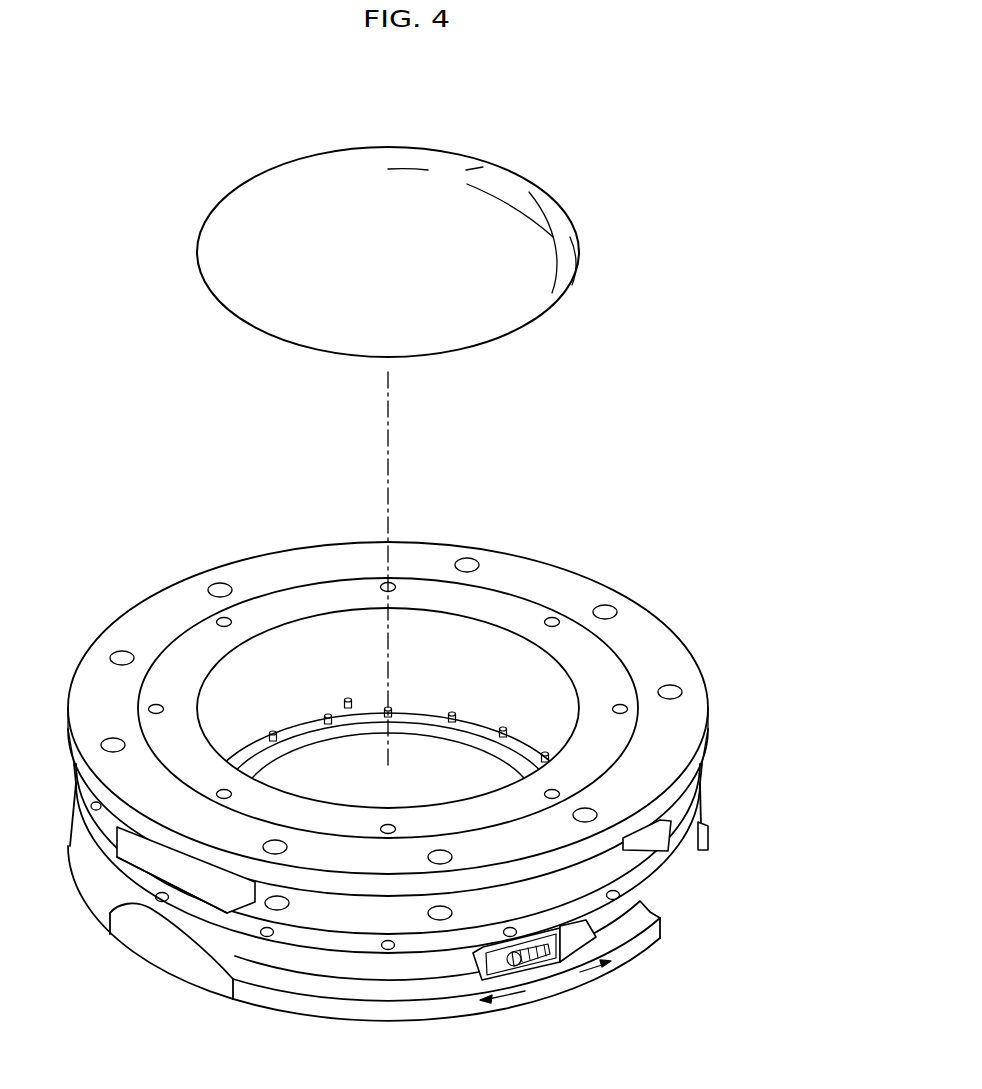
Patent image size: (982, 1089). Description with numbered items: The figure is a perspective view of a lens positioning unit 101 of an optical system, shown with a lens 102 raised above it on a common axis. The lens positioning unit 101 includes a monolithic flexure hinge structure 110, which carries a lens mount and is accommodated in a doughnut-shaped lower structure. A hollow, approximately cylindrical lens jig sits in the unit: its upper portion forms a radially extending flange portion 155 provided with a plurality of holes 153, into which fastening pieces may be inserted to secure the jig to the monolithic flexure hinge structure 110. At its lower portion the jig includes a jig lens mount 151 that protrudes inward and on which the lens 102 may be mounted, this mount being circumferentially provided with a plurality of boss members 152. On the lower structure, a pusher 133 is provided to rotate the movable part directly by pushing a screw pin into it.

The lens positioning unit 101 is at (457, 755).
The lens 102 is at (450, 178).
The monolithic flexure hinge structure 110 is at (693, 723).
The pusher 133 is at (572, 953).
The jig lens mount 151 is at (348, 700).
The boss members 152 is at (273, 733).
The holes 153 is at (552, 617).
The flange portion 155 is at (525, 613).